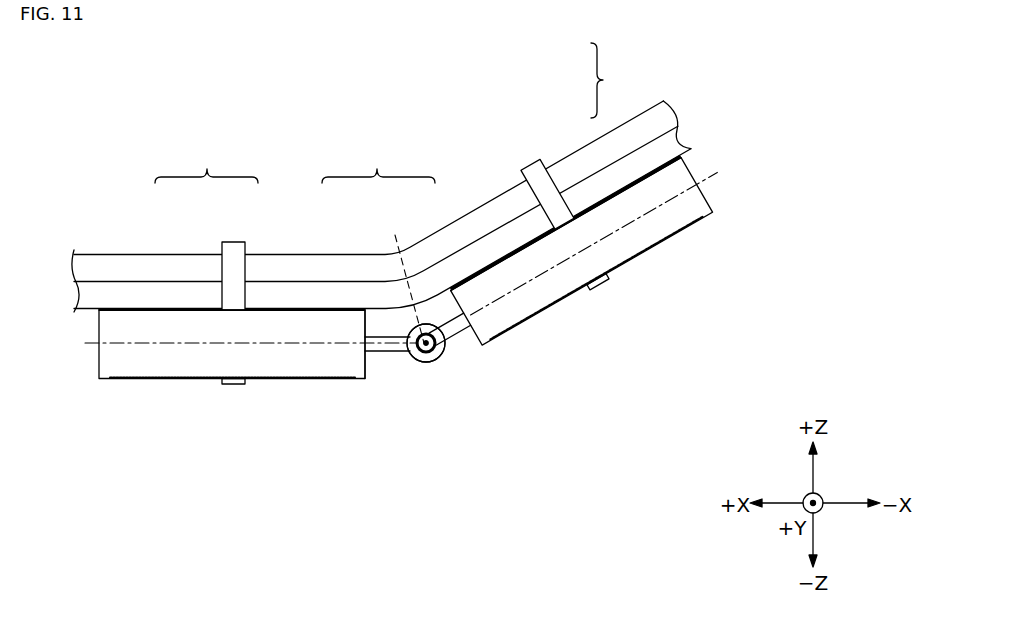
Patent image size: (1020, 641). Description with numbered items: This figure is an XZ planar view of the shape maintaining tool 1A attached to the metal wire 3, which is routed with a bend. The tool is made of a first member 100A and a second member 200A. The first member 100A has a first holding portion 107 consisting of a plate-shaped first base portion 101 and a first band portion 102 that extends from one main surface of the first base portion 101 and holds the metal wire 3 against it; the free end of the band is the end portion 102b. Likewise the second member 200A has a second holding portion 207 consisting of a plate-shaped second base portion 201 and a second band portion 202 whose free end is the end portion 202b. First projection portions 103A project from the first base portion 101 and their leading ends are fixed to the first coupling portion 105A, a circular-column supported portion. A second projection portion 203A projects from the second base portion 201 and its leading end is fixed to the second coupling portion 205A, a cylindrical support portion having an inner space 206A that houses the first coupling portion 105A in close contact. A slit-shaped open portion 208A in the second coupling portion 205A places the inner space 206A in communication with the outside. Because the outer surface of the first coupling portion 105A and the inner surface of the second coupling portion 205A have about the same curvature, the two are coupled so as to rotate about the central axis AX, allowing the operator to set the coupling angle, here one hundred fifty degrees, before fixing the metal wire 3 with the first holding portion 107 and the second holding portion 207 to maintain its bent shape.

The metal wire 3 is at (683, 117).
The second holding portion 207 is at (206, 163).
The second base portion 201 is at (173, 328).
The second band portion 202 is at (233, 242).
The end portion 202b is at (233, 385).
The second projection portion 203A is at (385, 352).
The shape maintaining tool 1A is at (378, 163).
The second member 200A is at (335, 298).
The first member 100A is at (471, 273).
The first base portion 101 is at (593, 222).
The first band portion 102 is at (528, 165).
The end portion 102b is at (606, 289).
The first holding portion 107 is at (618, 80).
The first projection portion 103A is at (461, 337).
The first coupling portion 105A is at (447, 338).
The open portion 208A is at (444, 358).
The second coupling portion 205A is at (421, 366).
The inner space 206A is at (430, 362).
The central axis AX is at (417, 353).